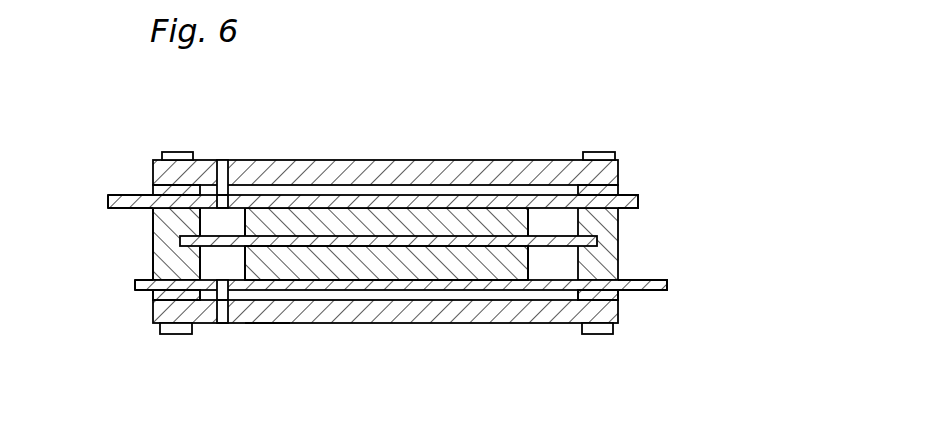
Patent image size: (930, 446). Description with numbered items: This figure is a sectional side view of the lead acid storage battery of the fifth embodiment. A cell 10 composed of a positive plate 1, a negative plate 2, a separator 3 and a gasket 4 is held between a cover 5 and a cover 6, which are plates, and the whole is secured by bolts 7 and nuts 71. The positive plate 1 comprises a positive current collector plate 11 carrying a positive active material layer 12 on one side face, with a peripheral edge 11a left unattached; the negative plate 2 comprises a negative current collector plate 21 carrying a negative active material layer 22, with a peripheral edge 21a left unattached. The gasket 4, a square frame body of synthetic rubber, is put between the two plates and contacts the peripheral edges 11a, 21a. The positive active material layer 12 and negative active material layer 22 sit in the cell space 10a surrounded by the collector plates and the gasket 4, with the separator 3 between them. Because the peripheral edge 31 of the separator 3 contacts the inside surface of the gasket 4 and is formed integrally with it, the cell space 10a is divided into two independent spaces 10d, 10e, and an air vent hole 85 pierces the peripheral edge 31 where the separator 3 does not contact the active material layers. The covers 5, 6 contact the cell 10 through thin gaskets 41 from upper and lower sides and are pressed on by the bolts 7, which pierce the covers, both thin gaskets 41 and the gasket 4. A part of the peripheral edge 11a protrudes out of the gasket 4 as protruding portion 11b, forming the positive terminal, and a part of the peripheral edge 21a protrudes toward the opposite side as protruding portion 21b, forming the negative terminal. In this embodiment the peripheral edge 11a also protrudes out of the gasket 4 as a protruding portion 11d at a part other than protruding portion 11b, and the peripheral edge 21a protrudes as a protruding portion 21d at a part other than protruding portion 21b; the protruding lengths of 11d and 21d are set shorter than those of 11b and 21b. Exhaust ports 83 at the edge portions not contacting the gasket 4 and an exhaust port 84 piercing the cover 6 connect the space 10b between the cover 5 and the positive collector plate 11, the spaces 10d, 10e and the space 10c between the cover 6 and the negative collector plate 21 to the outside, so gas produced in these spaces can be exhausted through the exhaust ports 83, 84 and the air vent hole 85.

The positive plate 1 is at (401, 320).
The negative plate 2 is at (373, 165).
The separator 3 is at (447, 272).
The gasket 4 is at (157, 270).
The cover 5 is at (282, 310).
The cover 6 is at (348, 168).
The bolt 7 is at (168, 152).
The cell 10 is at (370, 257).
The cell space 10a is at (68, 212).
The space 10b is at (493, 295).
The space 10c is at (523, 188).
The independent space 10d is at (213, 223).
The independent space 10e is at (208, 262).
The positive current collector plate 11 is at (356, 289).
The peripheral edge 11a is at (157, 305).
The protruding portion 11b is at (647, 292).
The protruding portion 11d is at (142, 290).
The positive active material layer 12 is at (340, 267).
The negative current collector plate 21 is at (397, 199).
The peripheral edge 21a is at (177, 203).
The protruding portion 21b is at (118, 198).
The protruding portion 21d is at (635, 197).
The negative active material layer 22 is at (412, 240).
The peripheral edge of separator 31 is at (267, 312).
The thin gasket 41 is at (155, 192).
The nut 71 is at (177, 333).
The exhaust port 83 is at (226, 197).
The exhaust port 84 is at (218, 163).
The air vent hole 85 is at (232, 300).